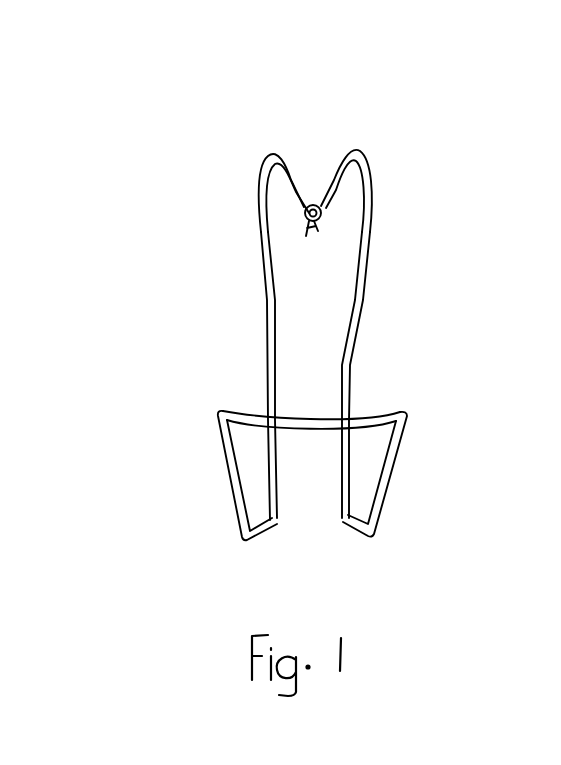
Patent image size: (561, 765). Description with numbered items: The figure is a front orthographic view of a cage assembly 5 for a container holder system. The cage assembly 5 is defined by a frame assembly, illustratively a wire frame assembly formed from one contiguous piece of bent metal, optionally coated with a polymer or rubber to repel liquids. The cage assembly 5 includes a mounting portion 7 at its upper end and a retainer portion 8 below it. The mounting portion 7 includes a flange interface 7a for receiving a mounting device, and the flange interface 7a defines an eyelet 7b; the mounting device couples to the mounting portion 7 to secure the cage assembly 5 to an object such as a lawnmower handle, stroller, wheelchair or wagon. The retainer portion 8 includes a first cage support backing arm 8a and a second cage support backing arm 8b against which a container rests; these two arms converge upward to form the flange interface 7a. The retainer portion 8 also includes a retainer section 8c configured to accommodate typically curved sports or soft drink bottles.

The cage assembly 5 is at (97, 142).
The mounting portion 7 is at (443, 158).
The flange interface 7a is at (297, 145).
The eyelet 7b is at (311, 235).
The retainer portion 8 is at (423, 533).
The first cage support backing arm 8a is at (272, 315).
The second cage support backing arm 8b is at (355, 315).
The retainer section 8c is at (308, 428).